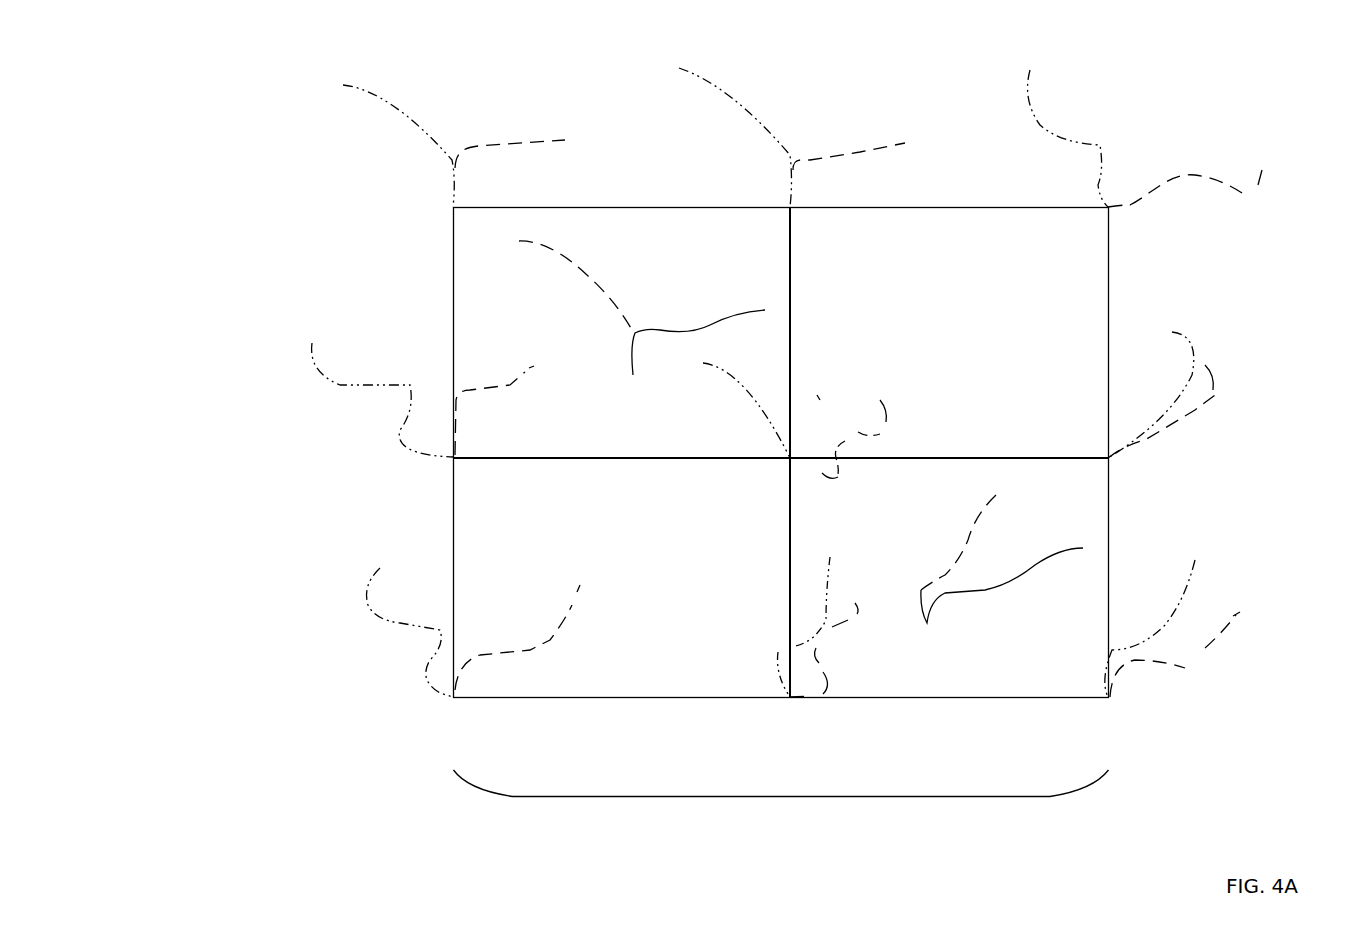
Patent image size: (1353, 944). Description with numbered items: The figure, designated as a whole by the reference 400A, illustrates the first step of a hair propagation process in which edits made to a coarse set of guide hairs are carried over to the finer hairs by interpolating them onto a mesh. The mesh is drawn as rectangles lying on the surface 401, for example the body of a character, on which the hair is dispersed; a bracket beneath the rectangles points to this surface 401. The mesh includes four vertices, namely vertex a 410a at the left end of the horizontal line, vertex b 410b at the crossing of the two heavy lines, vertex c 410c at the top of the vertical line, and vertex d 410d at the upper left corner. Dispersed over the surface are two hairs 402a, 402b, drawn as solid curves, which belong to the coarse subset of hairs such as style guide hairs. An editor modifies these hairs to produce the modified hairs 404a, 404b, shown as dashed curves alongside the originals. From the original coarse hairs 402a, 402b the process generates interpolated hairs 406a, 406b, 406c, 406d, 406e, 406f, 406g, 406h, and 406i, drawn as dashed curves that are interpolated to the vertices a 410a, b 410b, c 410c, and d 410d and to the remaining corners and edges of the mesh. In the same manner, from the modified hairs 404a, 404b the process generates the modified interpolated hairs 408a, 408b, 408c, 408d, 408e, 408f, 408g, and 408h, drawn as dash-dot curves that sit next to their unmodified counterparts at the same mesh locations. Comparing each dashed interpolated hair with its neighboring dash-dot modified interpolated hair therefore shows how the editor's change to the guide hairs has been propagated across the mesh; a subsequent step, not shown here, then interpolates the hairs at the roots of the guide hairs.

The panel arrangement 400A is at (247, 97).
The surface 401 is at (784, 796).
The hair 402a is at (738, 310).
The hair 402b is at (1035, 563).
The modified hair 404a is at (620, 305).
The modified hair 404b is at (968, 540).
The interpolated hair 406a is at (558, 143).
The interpolated hair 406b is at (905, 143).
The interpolated hair 406c is at (1248, 195).
The interpolated hair 406d is at (517, 376).
The interpolated hair 406e is at (858, 432).
The interpolated hair 406f is at (1205, 405).
The interpolated hair 406g is at (572, 612).
The interpolated hair 406h is at (822, 697).
The interpolated hair 406i is at (1200, 650).
The modified interpolated hair 408a is at (403, 105).
The modified interpolated hair 408b is at (758, 110).
The modified interpolated hair 408c is at (1105, 142).
The modified interpolated hair 408d is at (417, 380).
The modified interpolated hair 408e is at (754, 398).
The modified interpolated hair 408f is at (1163, 400).
The modified interpolated hair 408g is at (437, 626).
The modified interpolated hair 408h is at (775, 658).
The vertex a 410a is at (453, 458).
The vertex b 410b is at (790, 458).
The vertex c 410c is at (790, 207).
The vertex d 410d is at (453, 207).